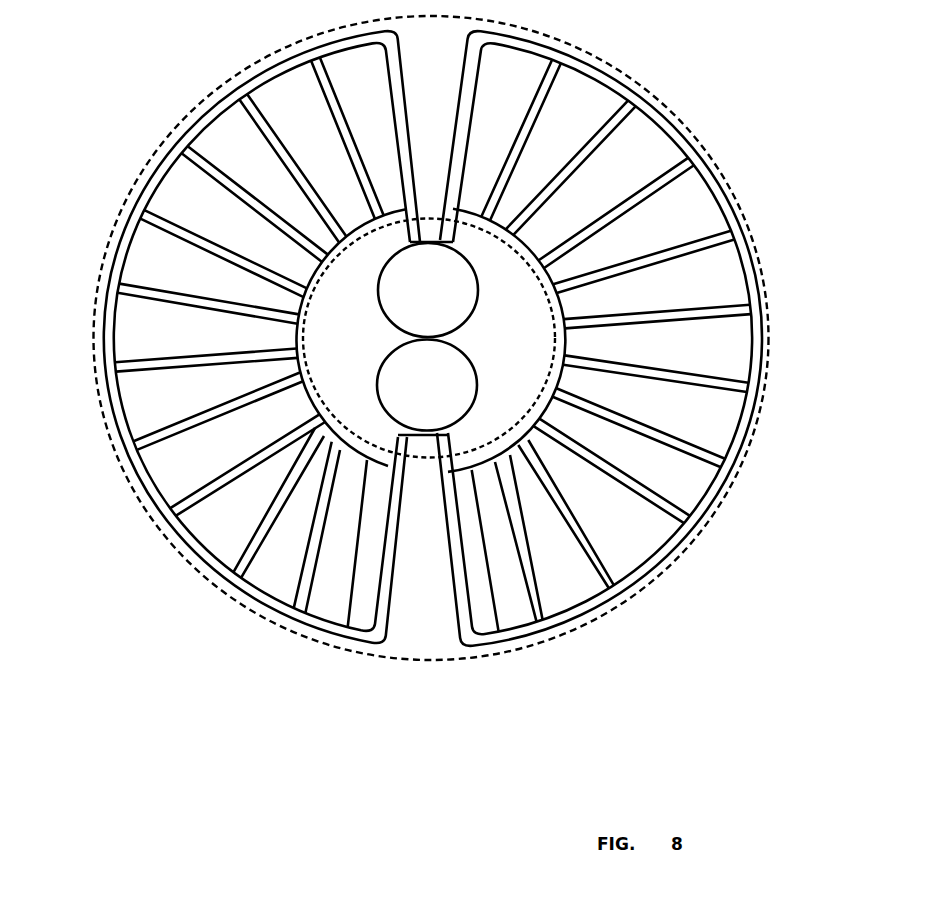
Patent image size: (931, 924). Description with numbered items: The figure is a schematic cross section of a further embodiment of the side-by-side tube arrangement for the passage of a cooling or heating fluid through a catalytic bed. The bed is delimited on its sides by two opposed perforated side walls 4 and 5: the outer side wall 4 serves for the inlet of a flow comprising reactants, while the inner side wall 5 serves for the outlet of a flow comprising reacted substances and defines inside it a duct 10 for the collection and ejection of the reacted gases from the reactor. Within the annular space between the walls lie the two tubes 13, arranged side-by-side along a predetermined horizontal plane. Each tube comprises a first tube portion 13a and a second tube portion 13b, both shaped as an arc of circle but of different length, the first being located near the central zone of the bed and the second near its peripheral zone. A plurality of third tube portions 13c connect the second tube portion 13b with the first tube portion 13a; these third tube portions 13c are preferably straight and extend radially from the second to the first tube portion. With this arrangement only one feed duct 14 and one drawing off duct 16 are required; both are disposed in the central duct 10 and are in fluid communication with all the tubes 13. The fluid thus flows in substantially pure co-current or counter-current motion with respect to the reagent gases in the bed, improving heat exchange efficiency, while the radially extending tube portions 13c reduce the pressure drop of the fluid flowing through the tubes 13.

The perforated side wall 4 is at (762, 262).
The perforated side wall 5 is at (528, 413).
The duct 10 is at (352, 390).
The tubes 13 is at (700, 146).
The first tube portion 13a is at (620, 503).
The second tube portion 13b is at (137, 477).
The third tube portions 13c is at (682, 378).
The feed duct 14 is at (378, 378).
The drawing off duct 16 is at (480, 279).